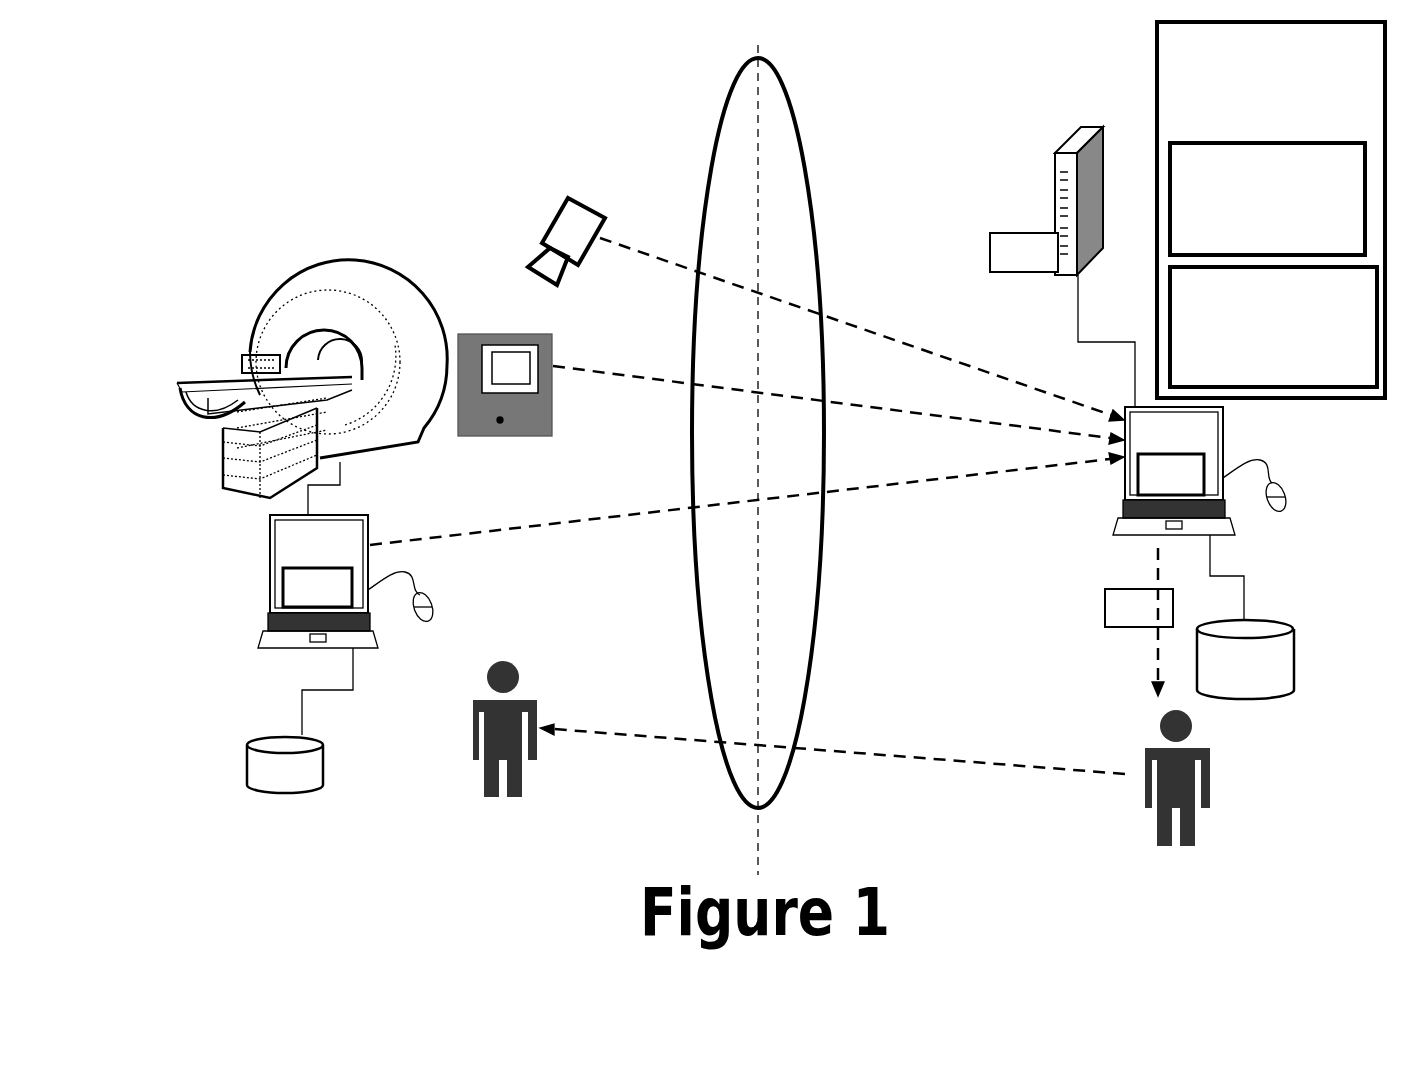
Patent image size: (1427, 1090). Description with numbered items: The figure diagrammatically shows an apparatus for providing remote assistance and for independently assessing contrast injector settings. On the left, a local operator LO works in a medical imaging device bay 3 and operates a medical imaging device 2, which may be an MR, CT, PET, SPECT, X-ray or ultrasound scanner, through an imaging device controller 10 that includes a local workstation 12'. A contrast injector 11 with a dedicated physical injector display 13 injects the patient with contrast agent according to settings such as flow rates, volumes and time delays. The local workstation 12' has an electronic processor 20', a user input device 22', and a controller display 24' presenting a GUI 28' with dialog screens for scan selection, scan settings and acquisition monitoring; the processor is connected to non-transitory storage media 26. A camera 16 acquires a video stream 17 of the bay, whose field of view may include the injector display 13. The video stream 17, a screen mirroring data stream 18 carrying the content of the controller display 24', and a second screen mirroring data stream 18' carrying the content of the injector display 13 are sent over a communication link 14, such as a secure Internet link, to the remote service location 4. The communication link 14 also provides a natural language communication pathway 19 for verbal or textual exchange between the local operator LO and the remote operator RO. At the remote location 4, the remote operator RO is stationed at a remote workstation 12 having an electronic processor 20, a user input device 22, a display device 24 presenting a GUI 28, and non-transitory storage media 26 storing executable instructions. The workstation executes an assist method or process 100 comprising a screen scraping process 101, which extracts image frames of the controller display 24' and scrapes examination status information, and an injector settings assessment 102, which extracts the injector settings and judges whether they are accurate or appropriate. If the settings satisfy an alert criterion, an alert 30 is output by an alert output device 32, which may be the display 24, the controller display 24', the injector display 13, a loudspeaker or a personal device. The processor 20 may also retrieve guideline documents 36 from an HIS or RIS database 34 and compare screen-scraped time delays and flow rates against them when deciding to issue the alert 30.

The medical imaging device 2 is at (239, 319).
The medical imaging device bay 3 is at (398, 829).
The remote service location 4 is at (889, 829).
The imaging device controller 10 is at (410, 514).
The contrast injector 11 is at (493, 312).
The remote workstation 12 is at (1184, 446).
The local workstation 12' is at (336, 562).
The injector display 13 is at (511, 369).
The communication link 14 is at (800, 176).
The camera 16 is at (528, 197).
The video stream 17 is at (642, 262).
The screen mirroring data stream 18 is at (747, 519).
The second screen mirroring data stream 18' is at (838, 405).
The natural language communication pathway 19 is at (635, 737).
The electronic processor 20 is at (1140, 505).
The electronic processor of local workstation 20' is at (274, 640).
The user input device 22 is at (1283, 504).
The user input device of local workstation 22' is at (415, 621).
The display device 24 is at (1174, 453).
The controller display 24' is at (319, 564).
The non-transitory storage media 26 is at (337, 763).
The graphical user interface 28 is at (1171, 474).
The GUI of imaging device controller 28' is at (317, 587).
The alert 30 is at (1139, 622).
The alert output device 32 is at (217, 703).
The HIS or RIS database 34 is at (1057, 228).
The guideline documents 36 is at (1024, 252).
The assist method or process 100 is at (1271, 210).
The screen scraping process 101 is at (1267, 199).
The injector settings assessment 102 is at (1273, 327).
The local operator LO is at (470, 745).
The remote operator RO is at (1145, 797).